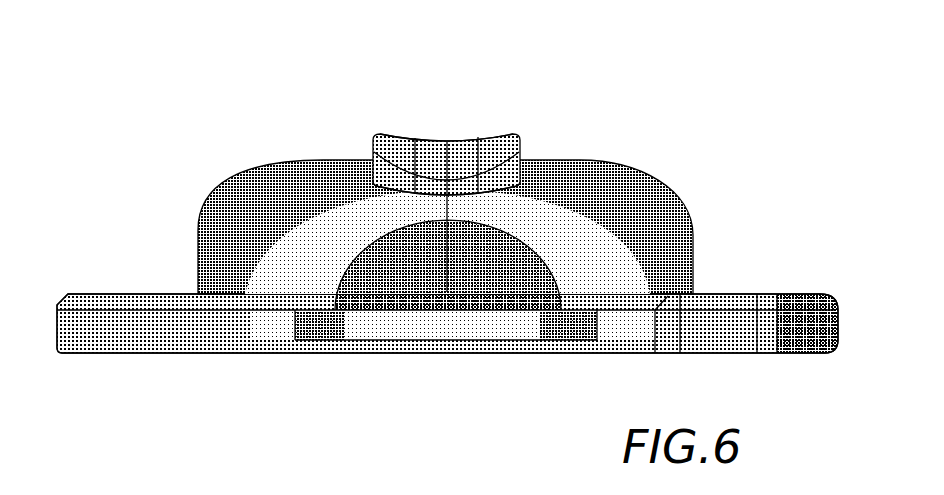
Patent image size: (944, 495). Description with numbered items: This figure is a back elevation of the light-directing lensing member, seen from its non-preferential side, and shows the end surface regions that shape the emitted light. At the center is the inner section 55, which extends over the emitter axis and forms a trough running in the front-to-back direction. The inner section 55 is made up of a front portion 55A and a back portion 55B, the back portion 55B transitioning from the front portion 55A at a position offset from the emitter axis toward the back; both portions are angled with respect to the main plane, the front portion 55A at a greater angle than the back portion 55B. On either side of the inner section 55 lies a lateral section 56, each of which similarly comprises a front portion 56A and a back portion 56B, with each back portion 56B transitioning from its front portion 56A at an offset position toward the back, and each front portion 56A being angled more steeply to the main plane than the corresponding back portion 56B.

The inner section 55 is at (467, 158).
The front portion 55A is at (463, 153).
The back portion 55B is at (450, 188).
The lateral section 56 is at (497, 147).
The front portion 56A is at (386, 135).
The back portion 56B is at (435, 186).